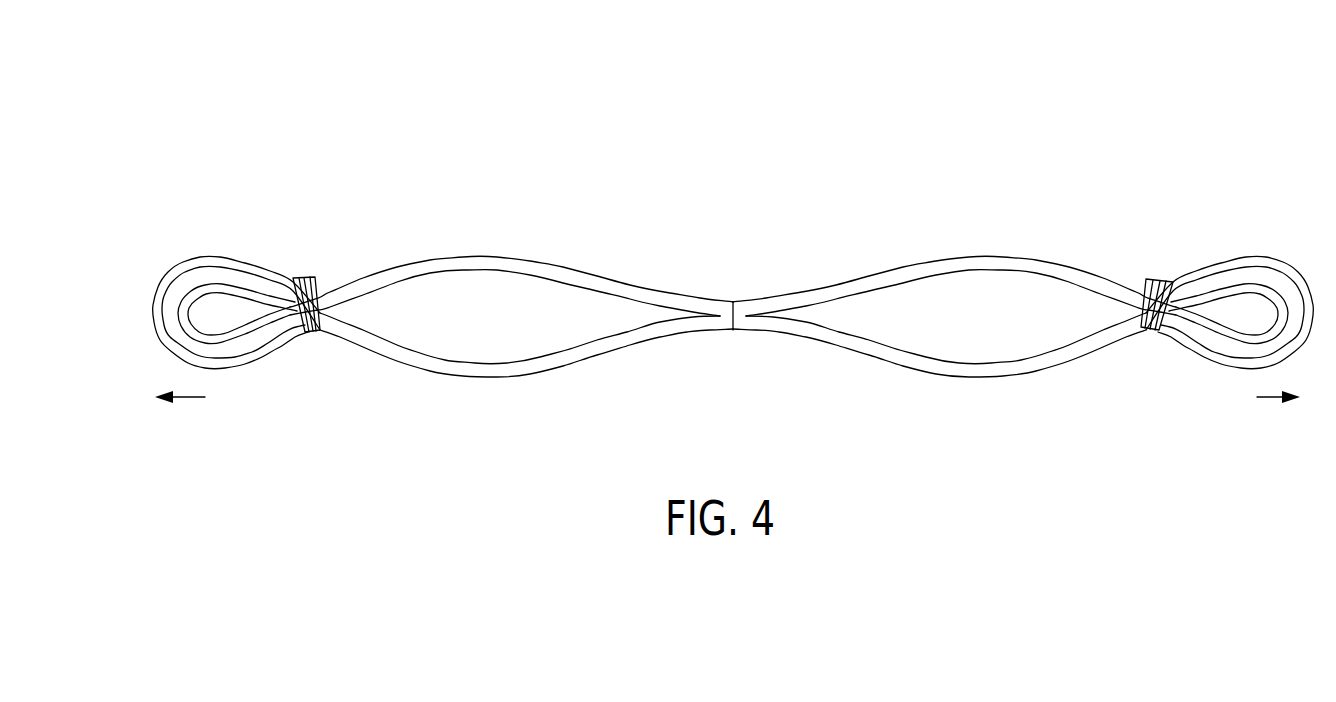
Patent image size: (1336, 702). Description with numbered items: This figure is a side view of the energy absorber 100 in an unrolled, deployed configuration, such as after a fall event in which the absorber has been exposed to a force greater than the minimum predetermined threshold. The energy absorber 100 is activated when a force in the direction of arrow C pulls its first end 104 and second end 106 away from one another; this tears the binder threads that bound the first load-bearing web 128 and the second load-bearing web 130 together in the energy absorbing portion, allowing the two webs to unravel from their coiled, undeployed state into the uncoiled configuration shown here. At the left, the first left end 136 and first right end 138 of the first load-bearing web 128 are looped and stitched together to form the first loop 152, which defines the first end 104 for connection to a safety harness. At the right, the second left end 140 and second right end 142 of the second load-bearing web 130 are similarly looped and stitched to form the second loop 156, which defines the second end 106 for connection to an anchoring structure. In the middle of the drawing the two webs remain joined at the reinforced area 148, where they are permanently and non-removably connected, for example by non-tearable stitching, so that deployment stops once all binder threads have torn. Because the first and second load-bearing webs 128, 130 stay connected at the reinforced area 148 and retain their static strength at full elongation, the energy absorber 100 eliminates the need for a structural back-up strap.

The energy absorber 100 is at (897, 141).
The first end 104 is at (255, 330).
The second end 106 is at (1202, 337).
The first load-bearing web 128 is at (165, 341).
The second load-bearing web 130 is at (192, 283).
The first left end 136 is at (487, 378).
The first right end 138 is at (981, 378).
The second left end 140 is at (487, 258).
The second right end 142 is at (981, 258).
The reinforced area 148 is at (733, 302).
The first loop 152 is at (306, 261).
The second loop 156 is at (1160, 261).